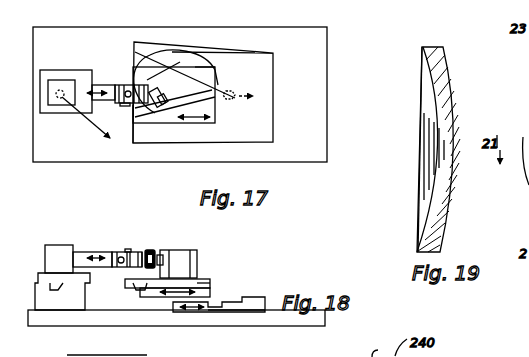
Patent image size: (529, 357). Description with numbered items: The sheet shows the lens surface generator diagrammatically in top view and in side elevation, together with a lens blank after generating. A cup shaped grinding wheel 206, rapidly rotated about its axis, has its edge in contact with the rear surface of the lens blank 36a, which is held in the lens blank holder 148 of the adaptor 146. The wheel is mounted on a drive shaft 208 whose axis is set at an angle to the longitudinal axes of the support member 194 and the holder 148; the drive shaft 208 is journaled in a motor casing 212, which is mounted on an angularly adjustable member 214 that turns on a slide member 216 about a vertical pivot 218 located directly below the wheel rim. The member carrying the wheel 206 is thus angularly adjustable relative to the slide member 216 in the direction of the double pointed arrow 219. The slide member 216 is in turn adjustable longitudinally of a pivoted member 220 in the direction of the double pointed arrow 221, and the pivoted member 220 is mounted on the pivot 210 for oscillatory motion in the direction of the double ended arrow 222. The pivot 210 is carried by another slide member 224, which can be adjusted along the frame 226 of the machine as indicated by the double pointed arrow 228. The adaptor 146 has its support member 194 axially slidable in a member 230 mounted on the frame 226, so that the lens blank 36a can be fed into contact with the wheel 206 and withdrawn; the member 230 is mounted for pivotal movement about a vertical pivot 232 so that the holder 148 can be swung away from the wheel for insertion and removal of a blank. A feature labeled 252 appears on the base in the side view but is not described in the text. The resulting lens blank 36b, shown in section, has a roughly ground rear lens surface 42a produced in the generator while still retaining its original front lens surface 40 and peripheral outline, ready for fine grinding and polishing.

In FIG. 17, the double ended arrow 222 is at (141, 45).
In FIG. 17, the lens blank 36a is at (156, 82).
In FIG. 18, the lens blank 36a is at (147, 254).
In FIG. 17, the drive shaft 208 is at (167, 55).
In FIG. 18, the drive shaft 208 is at (190, 264).
In FIG. 17, the angularly adjustable member 214 is at (180, 62).
In FIG. 18, the angularly adjustable member 214 is at (197, 283).
In FIG. 17, the motor casing 212 is at (185, 78).
In FIG. 18, the motor casing 212 is at (188, 260).
In FIG. 17, the double pointed arrow 219 is at (207, 68).
In FIG. 17, the pivot 210 is at (233, 88).
In FIG. 18, the pivot 210 is at (223, 305).
In FIG. 17, the double pointed arrow 221 is at (212, 115).
In FIG. 18, the double pointed arrow 221 is at (177, 297).
In FIG. 17, the adaptor 146 is at (124, 84).
In FIG. 18, the adaptor 146 is at (118, 252).
In FIG. 17, the support member 194 is at (97, 100).
In FIG. 18, the support member 194 is at (95, 255).
In FIG. 17, the lens blank holder 148 is at (132, 115).
In FIG. 18, the lens blank holder 148 is at (140, 252).
In FIG. 17, the cup shaped grinding wheel 206 is at (165, 105).
In FIG. 18, the cup shaped grinding wheel 206 is at (162, 252).
In FIG. 17, the slide member 216 is at (200, 122).
In FIG. 18, the slide member 216 is at (160, 297).
In FIG. 17, the pivoted member 220 is at (262, 135).
In FIG. 18, the pivoted member 220 is at (260, 300).
In FIG. 17, the frame 226 is at (327, 131).
In FIG. 18, the frame 226 is at (310, 318).
In FIG. 18, the member 230 is at (53, 255).
In FIG. 18, the vertical pivot 218 is at (125, 281).
In FIG. 18, the rail 252 is at (125, 356).
In FIG. 18, the double pointed arrow 228 is at (195, 312).
In FIG. 18, the slide member 224 is at (252, 312).
In FIG. 18, the vertical pivot 232 is at (55, 284).
In FIG. 19, the front lens surface 40 is at (462, 122).
In FIG. 19, the lens blank 36b is at (455, 208).
In FIG. 19, the rear lens surface 42a is at (418, 224).